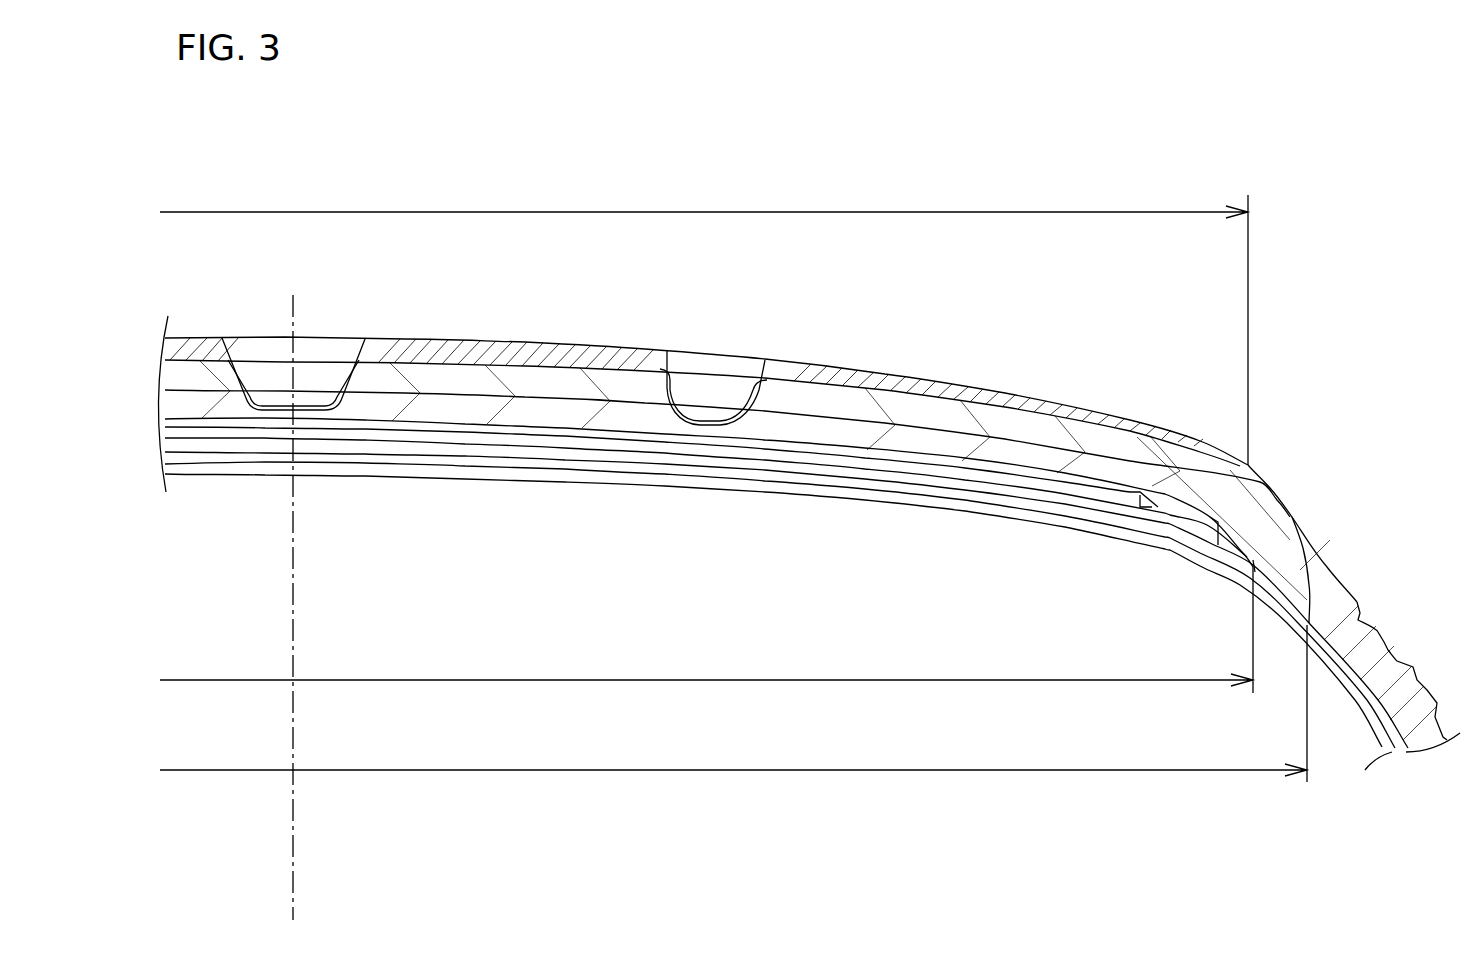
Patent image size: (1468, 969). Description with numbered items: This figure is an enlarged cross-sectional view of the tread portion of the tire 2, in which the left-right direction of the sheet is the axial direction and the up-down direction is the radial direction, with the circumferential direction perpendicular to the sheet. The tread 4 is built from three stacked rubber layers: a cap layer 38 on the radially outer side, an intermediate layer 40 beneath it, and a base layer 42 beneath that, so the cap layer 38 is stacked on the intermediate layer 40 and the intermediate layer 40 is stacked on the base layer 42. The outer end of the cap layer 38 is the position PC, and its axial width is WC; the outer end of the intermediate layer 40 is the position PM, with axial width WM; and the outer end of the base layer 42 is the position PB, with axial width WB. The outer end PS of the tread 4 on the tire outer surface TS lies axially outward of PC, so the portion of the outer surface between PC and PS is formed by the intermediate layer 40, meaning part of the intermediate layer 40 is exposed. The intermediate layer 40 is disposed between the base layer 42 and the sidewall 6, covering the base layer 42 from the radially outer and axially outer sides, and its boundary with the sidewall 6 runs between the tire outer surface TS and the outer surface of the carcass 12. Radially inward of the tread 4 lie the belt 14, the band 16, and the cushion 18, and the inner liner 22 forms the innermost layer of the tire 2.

The tire 2 is at (1350, 268).
The tread 4 is at (882, 358).
The sidewall 6 is at (1390, 678).
The carcass 12 is at (402, 478).
The belt 14 is at (543, 470).
The band 16 is at (477, 408).
The cushion 18 is at (1195, 545).
The inner liner 22 is at (242, 493).
The cap layer 38 is at (170, 351).
The intermediate layer 40 is at (170, 381).
The base layer 42 is at (168, 403).